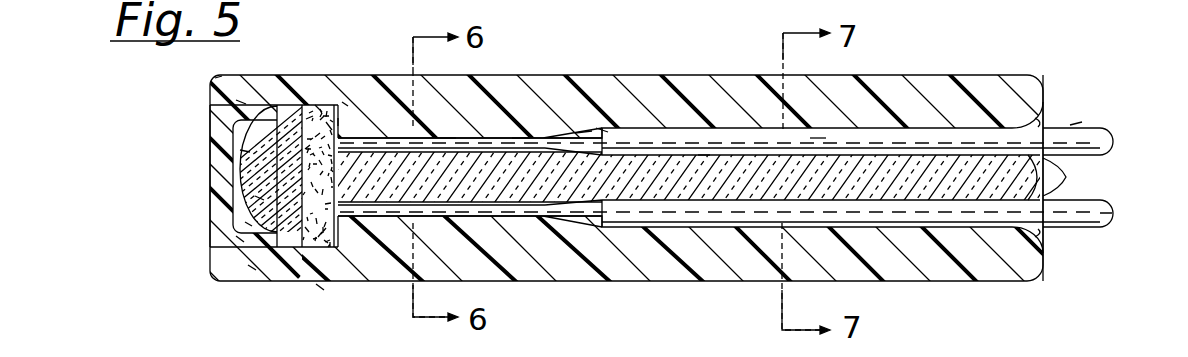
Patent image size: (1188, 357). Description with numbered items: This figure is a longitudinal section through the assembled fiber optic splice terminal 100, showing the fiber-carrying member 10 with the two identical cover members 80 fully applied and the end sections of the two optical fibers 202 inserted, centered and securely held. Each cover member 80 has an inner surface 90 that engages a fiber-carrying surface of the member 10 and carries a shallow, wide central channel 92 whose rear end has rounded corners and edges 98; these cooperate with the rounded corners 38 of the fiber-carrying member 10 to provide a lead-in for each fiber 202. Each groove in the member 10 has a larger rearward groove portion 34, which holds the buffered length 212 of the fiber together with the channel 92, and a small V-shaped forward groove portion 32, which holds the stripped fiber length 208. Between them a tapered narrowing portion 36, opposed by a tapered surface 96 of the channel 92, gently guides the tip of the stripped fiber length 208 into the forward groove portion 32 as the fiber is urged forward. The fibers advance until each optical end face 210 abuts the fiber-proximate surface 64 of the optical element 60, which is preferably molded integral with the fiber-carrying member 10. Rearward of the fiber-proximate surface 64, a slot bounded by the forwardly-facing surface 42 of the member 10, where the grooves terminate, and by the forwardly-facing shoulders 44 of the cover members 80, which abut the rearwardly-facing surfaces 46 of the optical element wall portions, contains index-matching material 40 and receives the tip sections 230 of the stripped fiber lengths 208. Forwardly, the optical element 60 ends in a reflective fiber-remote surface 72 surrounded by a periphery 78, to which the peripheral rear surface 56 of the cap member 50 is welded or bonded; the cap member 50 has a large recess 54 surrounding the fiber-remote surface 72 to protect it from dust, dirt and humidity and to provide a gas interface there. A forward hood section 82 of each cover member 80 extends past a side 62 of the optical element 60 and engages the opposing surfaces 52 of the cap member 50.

The fiber-carrying member 10 is at (797, 189).
The forward groove portion 32 is at (487, 139).
The rearward groove portion 34 is at (704, 153).
The tapered narrowing portion 36 is at (603, 130).
The rounded corners 38 is at (1067, 176).
The index-matching material 40 is at (333, 105).
The forwardly-facing surface 42 is at (332, 159).
The forwardly-facing shoulders 44 is at (330, 128).
The rearwardly-facing surfaces 46 is at (339, 122).
The cap member 50 is at (203, 142).
The opposing surfaces 52 is at (222, 78).
The large recess 54 is at (240, 236).
The peripheral rear surface 56 is at (232, 113).
The optical element 60 is at (310, 182).
The side 62 is at (347, 106).
The fiber-proximate surface 64 is at (262, 196).
The fiber-remote surface 72 is at (250, 222).
The periphery 78 is at (243, 110).
The cover member 80 is at (940, 114).
The forward hood section 82 is at (252, 268).
The inner surface 90 is at (448, 140).
The central channel 92 is at (704, 155).
The tapered surface 96 is at (585, 133).
The rounded corners and edges 98 is at (1045, 122).
The fiber optic splice terminal 100 is at (316, 293).
The optical fiber 202 is at (1082, 118).
The stripped fiber length 208 is at (521, 142).
The optical end face 210 is at (248, 150).
The buffered length 212 is at (818, 138).
The tip section 230 is at (318, 108).